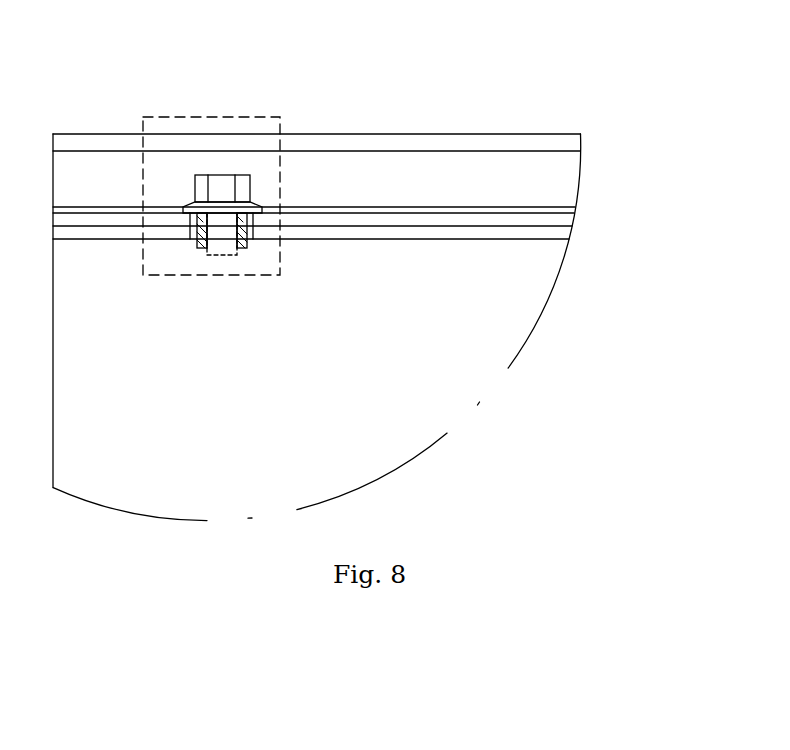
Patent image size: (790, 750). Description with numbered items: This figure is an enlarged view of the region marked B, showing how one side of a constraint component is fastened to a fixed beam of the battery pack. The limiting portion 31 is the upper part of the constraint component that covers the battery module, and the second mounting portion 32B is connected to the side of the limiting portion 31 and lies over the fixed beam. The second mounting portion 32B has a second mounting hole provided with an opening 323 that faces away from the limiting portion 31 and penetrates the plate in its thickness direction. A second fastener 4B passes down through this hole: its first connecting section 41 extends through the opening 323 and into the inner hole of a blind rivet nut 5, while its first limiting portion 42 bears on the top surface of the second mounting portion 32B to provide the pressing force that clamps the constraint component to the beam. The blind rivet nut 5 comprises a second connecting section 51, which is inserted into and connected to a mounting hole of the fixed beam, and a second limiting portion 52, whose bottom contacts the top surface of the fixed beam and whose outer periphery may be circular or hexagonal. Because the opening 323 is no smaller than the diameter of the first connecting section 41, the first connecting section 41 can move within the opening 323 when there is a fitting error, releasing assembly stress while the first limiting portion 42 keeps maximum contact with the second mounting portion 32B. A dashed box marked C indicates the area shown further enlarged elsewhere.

The limiting portion 31 is at (422, 163).
The second mounting portion 32B is at (580, 213).
The opening 323 is at (193, 218).
The second fastener 4B is at (236, 188).
The first connecting section 41 is at (217, 243).
The first limiting portion 42 is at (193, 200).
The blind rivet nut 5 is at (229, 275).
The second connecting section 51 is at (247, 242).
The second limiting portion 52 is at (243, 220).
The region B is at (334, 20).
The detail region C is at (280, 117).